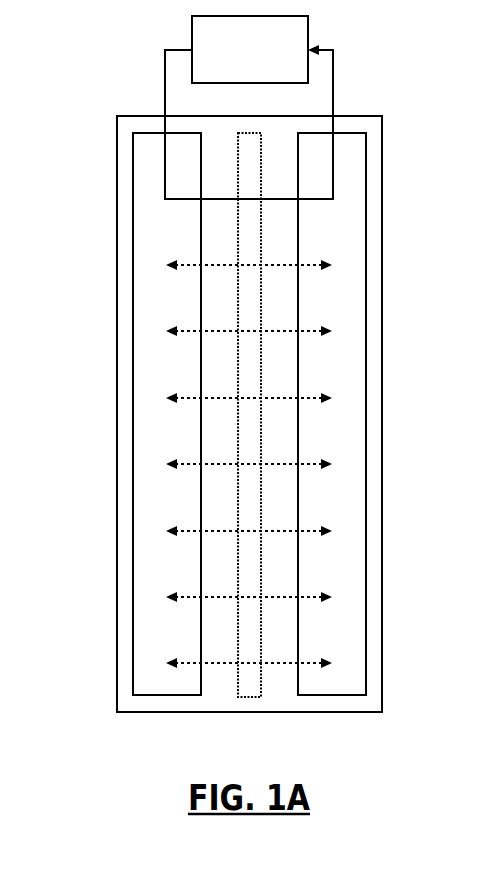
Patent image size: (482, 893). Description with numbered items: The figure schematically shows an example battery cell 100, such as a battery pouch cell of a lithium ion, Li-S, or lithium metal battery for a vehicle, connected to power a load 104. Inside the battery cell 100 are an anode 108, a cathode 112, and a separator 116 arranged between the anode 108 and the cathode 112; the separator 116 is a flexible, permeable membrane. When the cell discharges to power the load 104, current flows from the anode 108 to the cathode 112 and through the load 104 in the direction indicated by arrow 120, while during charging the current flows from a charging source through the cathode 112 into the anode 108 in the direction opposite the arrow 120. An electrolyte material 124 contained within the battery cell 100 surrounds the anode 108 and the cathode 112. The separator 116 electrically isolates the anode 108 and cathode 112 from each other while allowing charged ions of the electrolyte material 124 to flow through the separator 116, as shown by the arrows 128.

The battery cell 100 is at (117, 150).
The load 104 is at (192, 32).
The anode 108 is at (133, 413).
The cathode 112 is at (366, 413).
The separator 116 is at (237, 367).
The arrow 120 is at (165, 88).
The electrolyte material 124 is at (282, 301).
The arrows 128 is at (282, 264).